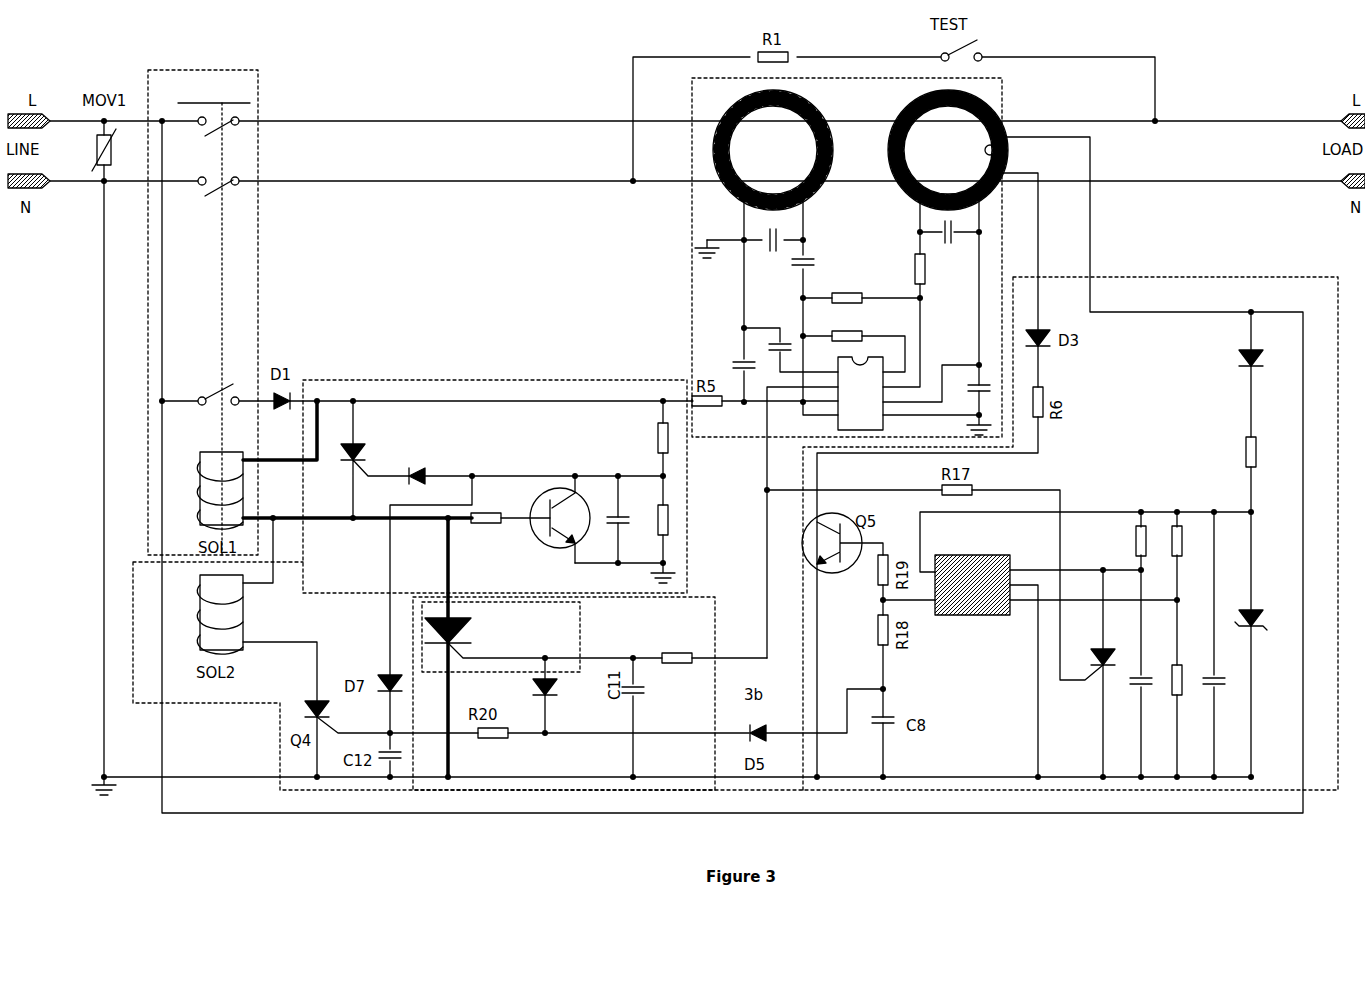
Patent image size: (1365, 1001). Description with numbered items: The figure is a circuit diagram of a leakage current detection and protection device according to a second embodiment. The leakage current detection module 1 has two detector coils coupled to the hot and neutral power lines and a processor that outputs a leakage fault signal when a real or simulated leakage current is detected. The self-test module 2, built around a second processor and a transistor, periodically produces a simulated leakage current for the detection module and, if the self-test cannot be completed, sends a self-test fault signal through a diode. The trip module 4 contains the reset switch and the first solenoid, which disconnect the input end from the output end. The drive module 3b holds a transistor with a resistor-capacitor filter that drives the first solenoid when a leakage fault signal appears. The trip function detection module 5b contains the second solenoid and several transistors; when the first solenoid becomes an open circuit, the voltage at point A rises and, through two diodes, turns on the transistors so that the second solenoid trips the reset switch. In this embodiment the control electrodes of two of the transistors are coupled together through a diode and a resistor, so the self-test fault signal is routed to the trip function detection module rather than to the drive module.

The leakage current detection module 1 is at (692, 240).
The self-test module 2 is at (1222, 277).
The drive module 3b is at (770, 703).
The trip module 4 is at (258, 240).
The trip function detection module 5b is at (467, 380).
The point A is at (575, 476).